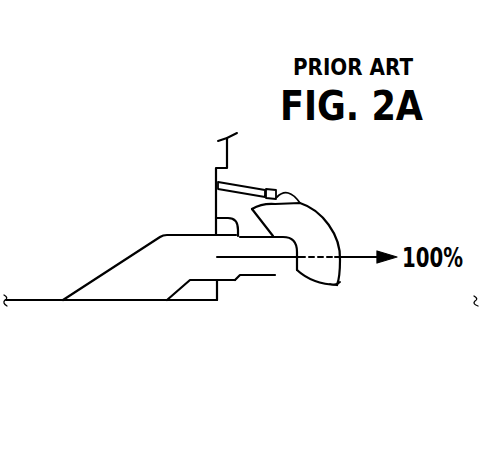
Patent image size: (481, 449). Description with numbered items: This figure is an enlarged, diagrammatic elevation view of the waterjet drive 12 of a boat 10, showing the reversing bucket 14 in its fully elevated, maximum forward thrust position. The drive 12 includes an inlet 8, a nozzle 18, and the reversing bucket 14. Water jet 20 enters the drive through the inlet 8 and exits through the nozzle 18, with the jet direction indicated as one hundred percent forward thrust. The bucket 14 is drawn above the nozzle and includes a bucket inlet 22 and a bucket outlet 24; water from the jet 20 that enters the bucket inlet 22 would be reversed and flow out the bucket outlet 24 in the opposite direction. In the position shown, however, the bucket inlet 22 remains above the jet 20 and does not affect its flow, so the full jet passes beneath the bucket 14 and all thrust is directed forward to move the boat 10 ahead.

The inlet 8 is at (148, 288).
The boat 10 is at (24, 302).
The waterjet drive 12 is at (159, 237).
The reversing bucket 14 is at (321, 213).
The nozzle 18 is at (214, 219).
The water jet 20 is at (278, 258).
The bucket inlet 22 is at (277, 210).
The bucket outlet 24 is at (333, 284).